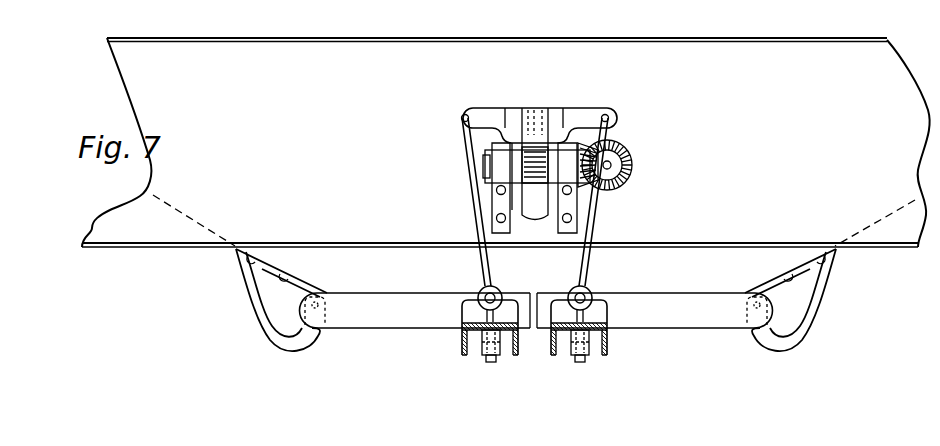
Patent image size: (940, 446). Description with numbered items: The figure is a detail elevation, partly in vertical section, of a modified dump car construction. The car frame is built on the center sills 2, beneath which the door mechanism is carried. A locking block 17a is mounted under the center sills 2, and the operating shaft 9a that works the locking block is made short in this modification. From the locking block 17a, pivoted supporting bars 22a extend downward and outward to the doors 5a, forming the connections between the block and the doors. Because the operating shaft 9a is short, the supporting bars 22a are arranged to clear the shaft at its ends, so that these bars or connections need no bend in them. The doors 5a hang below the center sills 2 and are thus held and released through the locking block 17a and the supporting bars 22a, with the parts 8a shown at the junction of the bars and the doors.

The center sills 2 is at (506, 142).
The locking block 17a is at (553, 108).
The operating shaft 9a is at (485, 167).
The supporting bars 22a is at (646, 271).
The doors 5a is at (690, 318).
The clamps 8a is at (515, 355).